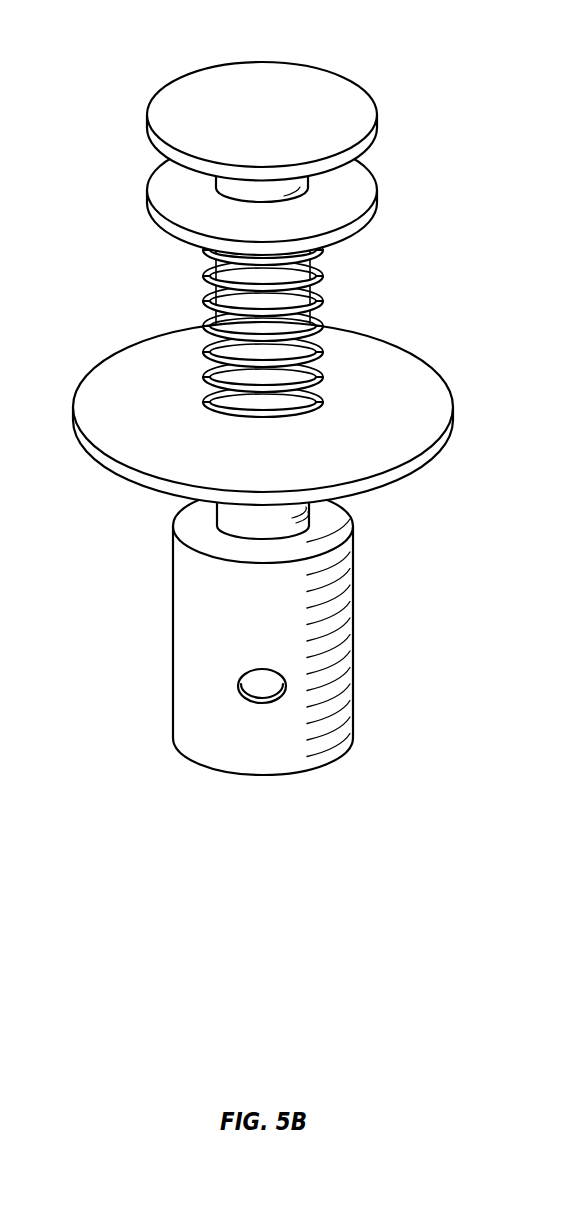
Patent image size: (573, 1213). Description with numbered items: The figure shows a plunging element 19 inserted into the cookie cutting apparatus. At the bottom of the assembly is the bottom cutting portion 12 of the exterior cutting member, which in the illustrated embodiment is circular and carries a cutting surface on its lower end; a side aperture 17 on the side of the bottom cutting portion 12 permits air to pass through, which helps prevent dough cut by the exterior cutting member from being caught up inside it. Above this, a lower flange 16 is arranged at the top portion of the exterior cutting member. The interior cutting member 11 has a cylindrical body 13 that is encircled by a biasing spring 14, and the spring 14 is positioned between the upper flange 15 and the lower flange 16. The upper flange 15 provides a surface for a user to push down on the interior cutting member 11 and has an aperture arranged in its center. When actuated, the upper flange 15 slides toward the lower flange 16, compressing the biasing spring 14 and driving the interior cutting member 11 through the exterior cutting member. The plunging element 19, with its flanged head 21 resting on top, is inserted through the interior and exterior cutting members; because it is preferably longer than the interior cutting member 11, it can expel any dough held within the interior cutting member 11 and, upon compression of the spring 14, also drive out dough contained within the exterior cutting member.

The interior cutting member 11 is at (403, 65).
The bottom cutting portion 12 is at (172, 652).
The cylindrical body 13 is at (235, 280).
The biasing spring 14 is at (320, 280).
The upper flange 15 is at (148, 202).
The lower flange 16 is at (98, 381).
The side aperture 17 is at (237, 697).
The plunging element 19 is at (149, 130).
The flanged head 21 is at (178, 88).